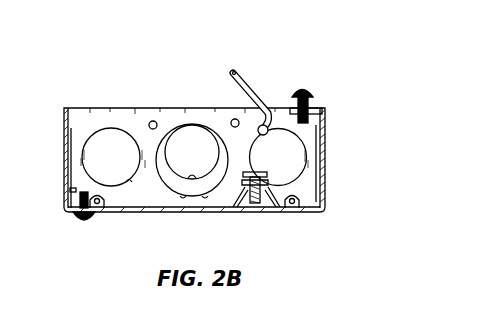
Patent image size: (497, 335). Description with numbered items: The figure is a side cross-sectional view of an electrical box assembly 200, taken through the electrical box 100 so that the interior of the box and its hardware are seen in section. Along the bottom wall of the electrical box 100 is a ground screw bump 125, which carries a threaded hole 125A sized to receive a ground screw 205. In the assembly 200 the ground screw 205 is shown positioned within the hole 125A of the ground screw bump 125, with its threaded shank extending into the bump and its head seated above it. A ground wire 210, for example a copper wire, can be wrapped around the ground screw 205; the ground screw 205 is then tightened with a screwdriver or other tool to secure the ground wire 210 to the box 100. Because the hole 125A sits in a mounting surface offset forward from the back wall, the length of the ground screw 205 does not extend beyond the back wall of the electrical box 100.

The electrical box assembly 200 is at (283, 48).
The electrical box 100 is at (63, 132).
The ground wire 210 is at (208, 126).
The ground screw 205 is at (269, 182).
The ground screw bump 125 is at (281, 193).
The threaded hole 125A is at (243, 186).